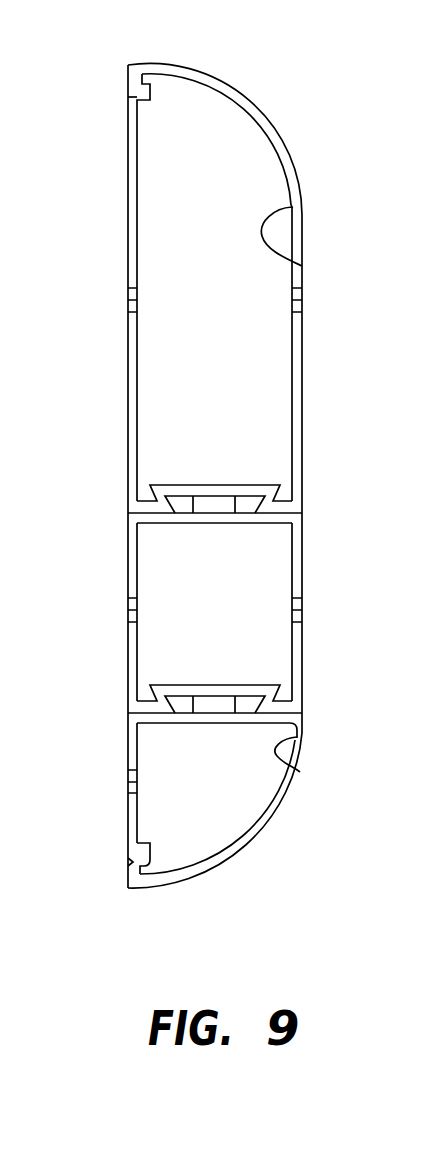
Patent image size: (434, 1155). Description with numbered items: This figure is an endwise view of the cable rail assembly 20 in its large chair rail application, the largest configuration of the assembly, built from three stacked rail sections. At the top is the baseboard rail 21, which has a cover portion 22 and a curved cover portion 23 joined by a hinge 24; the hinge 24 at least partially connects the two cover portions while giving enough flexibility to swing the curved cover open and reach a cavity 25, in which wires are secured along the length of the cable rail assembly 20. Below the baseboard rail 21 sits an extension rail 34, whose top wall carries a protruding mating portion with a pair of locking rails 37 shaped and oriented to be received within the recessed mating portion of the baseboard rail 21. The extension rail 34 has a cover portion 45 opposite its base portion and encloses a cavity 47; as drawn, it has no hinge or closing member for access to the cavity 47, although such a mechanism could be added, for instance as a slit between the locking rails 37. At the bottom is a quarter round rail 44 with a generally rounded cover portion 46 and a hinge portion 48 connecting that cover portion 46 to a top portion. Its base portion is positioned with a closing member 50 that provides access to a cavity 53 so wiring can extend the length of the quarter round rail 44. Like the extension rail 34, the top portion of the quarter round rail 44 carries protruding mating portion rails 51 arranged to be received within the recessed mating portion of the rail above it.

The cable rail assembly 20 is at (232, 63).
The baseboard rail 21 is at (305, 392).
The cover portion 22 is at (303, 342).
The curved cover portion 23 is at (243, 116).
The hinge 24 is at (302, 266).
The cavity 25 is at (167, 235).
The extension rail 34 is at (305, 590).
The locking rails 37 is at (250, 495).
The quarter round rail 44 is at (280, 807).
The cover portion 45 is at (303, 543).
The cover portion 46 is at (237, 852).
The cavity 47 is at (163, 567).
The hinge portion 48 is at (300, 772).
The closing member 50 is at (125, 858).
The protruding mating portion rails 51 is at (250, 695).
The cavity 53 is at (160, 763).